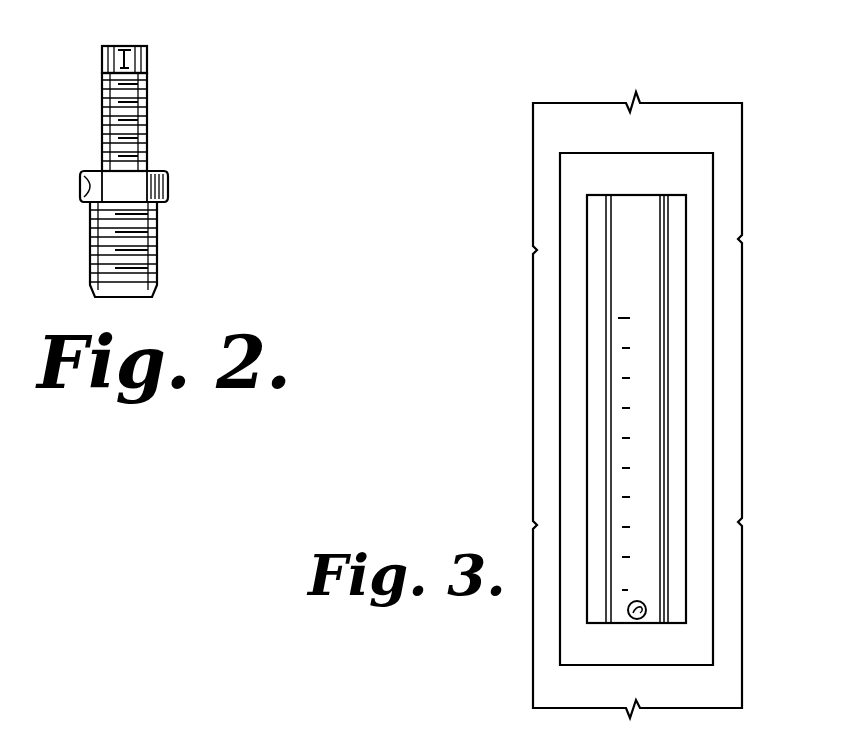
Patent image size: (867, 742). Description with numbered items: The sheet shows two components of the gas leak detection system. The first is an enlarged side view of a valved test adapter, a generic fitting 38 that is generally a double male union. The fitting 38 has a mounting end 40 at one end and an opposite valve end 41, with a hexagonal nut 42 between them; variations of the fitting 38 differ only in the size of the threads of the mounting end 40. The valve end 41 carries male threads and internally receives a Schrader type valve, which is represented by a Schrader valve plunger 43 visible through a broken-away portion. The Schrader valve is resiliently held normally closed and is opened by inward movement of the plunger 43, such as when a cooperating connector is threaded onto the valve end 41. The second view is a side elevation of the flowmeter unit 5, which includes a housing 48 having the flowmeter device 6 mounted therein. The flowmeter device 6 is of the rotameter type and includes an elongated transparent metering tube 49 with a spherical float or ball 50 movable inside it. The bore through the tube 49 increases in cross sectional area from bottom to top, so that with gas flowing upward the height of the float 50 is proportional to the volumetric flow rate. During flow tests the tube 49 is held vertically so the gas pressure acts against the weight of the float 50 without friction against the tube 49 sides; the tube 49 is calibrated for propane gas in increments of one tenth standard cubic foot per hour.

In FIG. 3, the flowmeter unit 5 is at (533, 118).
In FIG. 3, the flowmeter device 6 is at (703, 338).
In FIG. 2, the fitting 38 is at (168, 190).
In FIG. 2, the mounting end 40 is at (155, 266).
In FIG. 2, the valve end 41 is at (140, 96).
In FIG. 2, the hexagonal nut 42 is at (80, 188).
In FIG. 2, the Schrader valve plunger 43 is at (124, 46).
In FIG. 3, the housing 48 is at (716, 110).
In FIG. 3, the metering tube 49 is at (607, 290).
In FIG. 3, the float 50 is at (641, 620).